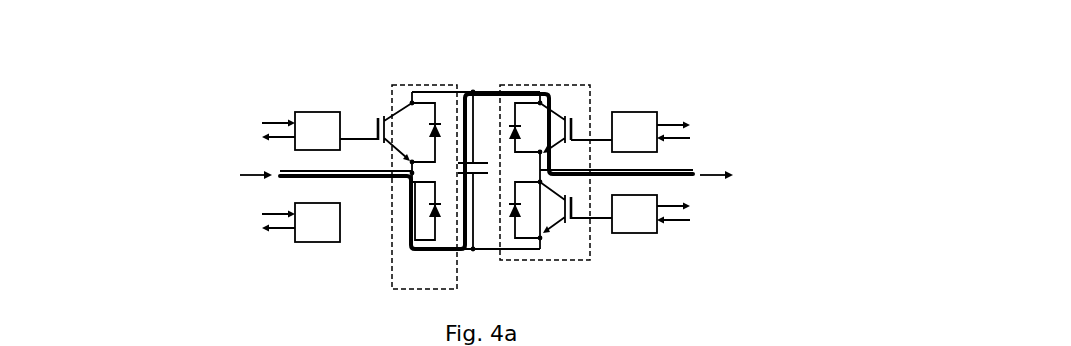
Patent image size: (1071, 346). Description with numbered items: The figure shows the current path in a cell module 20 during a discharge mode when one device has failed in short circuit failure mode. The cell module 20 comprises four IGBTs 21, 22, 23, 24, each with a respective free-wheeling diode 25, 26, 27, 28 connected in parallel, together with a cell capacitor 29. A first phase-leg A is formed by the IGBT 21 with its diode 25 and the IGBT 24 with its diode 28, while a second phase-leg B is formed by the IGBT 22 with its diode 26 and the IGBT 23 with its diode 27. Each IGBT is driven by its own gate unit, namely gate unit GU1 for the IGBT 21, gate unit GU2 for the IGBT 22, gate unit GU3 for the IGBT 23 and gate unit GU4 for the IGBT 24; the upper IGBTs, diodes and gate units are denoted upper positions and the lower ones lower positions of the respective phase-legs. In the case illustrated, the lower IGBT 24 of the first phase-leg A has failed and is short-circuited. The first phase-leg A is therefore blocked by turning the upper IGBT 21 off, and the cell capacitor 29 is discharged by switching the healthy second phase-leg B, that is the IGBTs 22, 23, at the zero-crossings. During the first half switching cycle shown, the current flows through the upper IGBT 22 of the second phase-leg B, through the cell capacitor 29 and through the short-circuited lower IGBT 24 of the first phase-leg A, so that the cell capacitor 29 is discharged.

The cell module 20 is at (590, 34).
The IGBT 21 is at (366, 107).
The IGBT 22 is at (587, 105).
The IGBT 23 is at (580, 241).
The IGBT 24 is at (421, 242).
The free-wheeling diode 25 is at (443, 103).
The free-wheeling diode 26 is at (508, 99).
The free-wheeling diode 27 is at (508, 232).
The free-wheeling diode 28 is at (447, 232).
The cell capacitor 29 is at (493, 167).
The first phase-leg A is at (407, 83).
The second phase-leg B is at (563, 86).
The gate unit GU1 is at (311, 114).
The gate unit GU2 is at (650, 122).
The gate unit GU3 is at (652, 230).
The gate unit GU4 is at (294, 237).